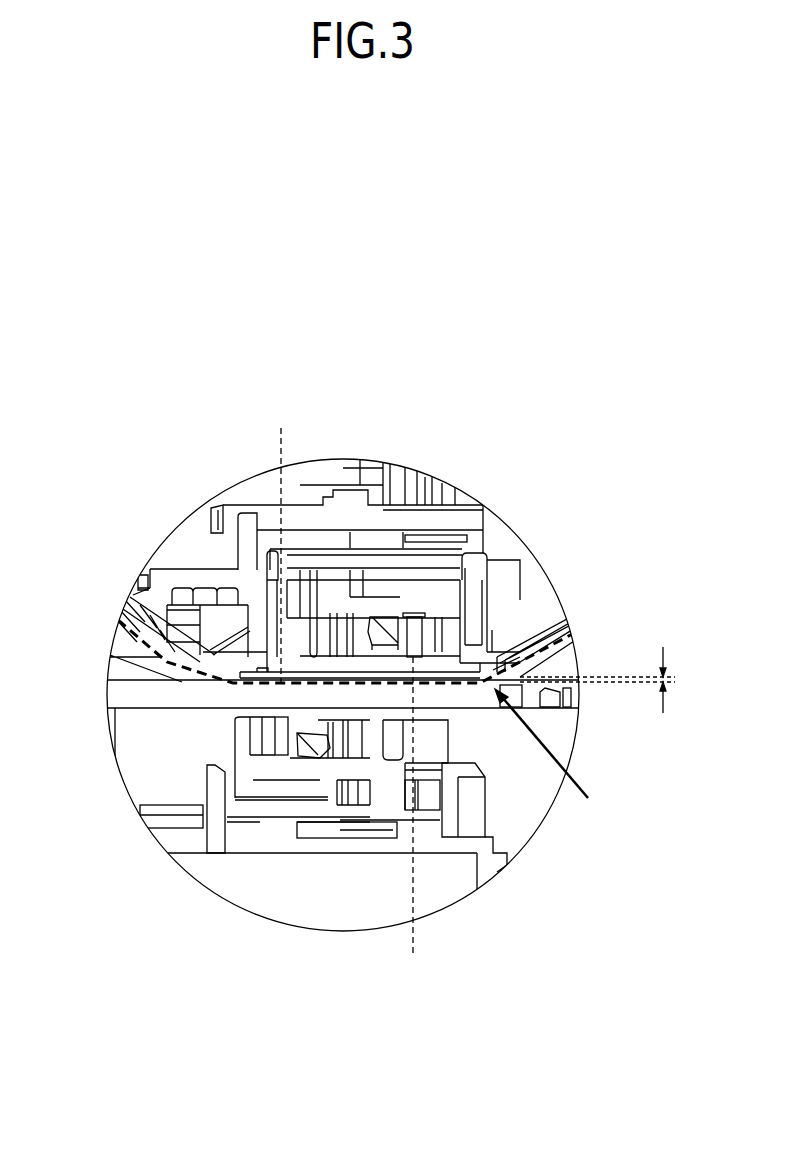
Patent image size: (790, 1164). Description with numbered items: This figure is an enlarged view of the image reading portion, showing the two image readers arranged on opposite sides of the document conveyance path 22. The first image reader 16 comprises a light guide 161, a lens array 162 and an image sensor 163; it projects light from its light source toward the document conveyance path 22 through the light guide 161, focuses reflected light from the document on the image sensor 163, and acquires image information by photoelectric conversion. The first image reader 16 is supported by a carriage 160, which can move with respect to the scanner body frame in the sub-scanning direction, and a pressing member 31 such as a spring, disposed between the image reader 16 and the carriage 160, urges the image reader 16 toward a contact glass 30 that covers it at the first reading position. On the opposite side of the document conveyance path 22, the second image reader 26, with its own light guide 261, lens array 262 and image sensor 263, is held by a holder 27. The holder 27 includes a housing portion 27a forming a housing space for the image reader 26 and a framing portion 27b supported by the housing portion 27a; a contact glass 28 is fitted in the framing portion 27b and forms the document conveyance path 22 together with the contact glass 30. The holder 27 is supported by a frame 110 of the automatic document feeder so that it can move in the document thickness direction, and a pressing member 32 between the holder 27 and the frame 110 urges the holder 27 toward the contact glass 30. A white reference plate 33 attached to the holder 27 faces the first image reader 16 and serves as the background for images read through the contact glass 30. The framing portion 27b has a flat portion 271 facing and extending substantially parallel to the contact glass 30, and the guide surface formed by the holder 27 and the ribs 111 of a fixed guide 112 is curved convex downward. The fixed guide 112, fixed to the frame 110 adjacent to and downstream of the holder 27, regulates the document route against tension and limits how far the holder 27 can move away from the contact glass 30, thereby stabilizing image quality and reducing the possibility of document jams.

The first image reader 16 is at (218, 777).
The document conveyance path 22 is at (133, 595).
The second image reader 26 is at (482, 585).
The holder 27 is at (636, 542).
The housing portion 27a is at (487, 610).
The framing portion 27b is at (550, 637).
The contact glass 28 is at (458, 687).
The contact glass 30 is at (168, 697).
The pressing member 31 is at (255, 805).
The pressing member 32 is at (365, 540).
The white reference plate 33 is at (265, 665).
The frame 110 is at (497, 583).
The ribs 111 is at (537, 677).
The fixed guide 112 is at (512, 660).
The carriage 160 is at (497, 868).
The light guide 161 is at (318, 755).
The lens array 162 is at (262, 798).
The image sensor 163 is at (283, 738).
The light guide 261 is at (375, 625).
The lens array 262 is at (422, 627).
The image sensor 263 is at (420, 635).
The flat portion 271 is at (483, 683).